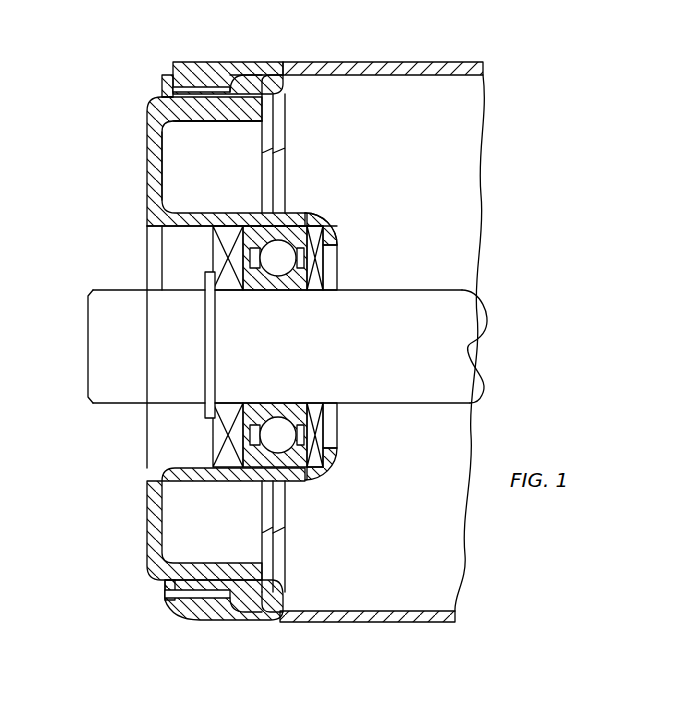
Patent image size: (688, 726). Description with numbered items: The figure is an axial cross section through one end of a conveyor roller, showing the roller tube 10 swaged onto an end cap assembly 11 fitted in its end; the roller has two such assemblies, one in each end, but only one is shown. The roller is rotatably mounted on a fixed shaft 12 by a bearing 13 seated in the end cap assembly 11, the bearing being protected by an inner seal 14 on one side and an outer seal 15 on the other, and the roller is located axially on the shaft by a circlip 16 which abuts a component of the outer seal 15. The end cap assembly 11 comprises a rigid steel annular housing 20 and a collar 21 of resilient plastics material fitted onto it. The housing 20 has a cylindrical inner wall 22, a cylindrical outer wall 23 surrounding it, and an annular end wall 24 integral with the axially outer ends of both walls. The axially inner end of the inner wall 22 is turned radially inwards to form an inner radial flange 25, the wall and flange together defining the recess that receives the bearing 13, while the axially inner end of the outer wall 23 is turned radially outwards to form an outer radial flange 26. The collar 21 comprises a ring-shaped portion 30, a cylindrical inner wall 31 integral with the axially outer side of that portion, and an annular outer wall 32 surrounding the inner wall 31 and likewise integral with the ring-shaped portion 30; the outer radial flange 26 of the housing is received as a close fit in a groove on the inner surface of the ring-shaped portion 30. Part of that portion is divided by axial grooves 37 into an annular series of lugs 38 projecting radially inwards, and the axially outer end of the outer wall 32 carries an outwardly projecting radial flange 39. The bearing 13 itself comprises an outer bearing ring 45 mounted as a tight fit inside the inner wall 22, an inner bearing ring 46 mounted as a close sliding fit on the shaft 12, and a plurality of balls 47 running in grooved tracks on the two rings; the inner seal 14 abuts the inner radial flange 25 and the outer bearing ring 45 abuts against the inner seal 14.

The roller tube 10 is at (440, 62).
The end cap assembly 11 is at (148, 125).
The fixed shaft 12 is at (97, 305).
The bearing 13 is at (307, 265).
The inner seal 14 is at (322, 232).
The outer seal 15 is at (207, 245).
The circlip 16 is at (207, 413).
The annular housing 20 is at (150, 183).
The collar 21 is at (160, 88).
The cylindrical inner wall 22 is at (310, 212).
The cylindrical outer wall 23 is at (208, 125).
The annular end wall 24 is at (163, 173).
The inner radial flange 25 is at (338, 240).
The outer radial flange 26 is at (270, 76).
The ring-shaped portion 30 is at (233, 80).
The cylindrical inner wall 31 is at (186, 105).
The annular outer wall 32 is at (193, 78).
The axial groove 37 is at (283, 150).
The lug 38 is at (268, 115).
The radial flange 39 is at (166, 73).
The outer bearing ring 45 is at (306, 222).
The inner bearing ring 46 is at (292, 290).
The ball 47 is at (273, 272).